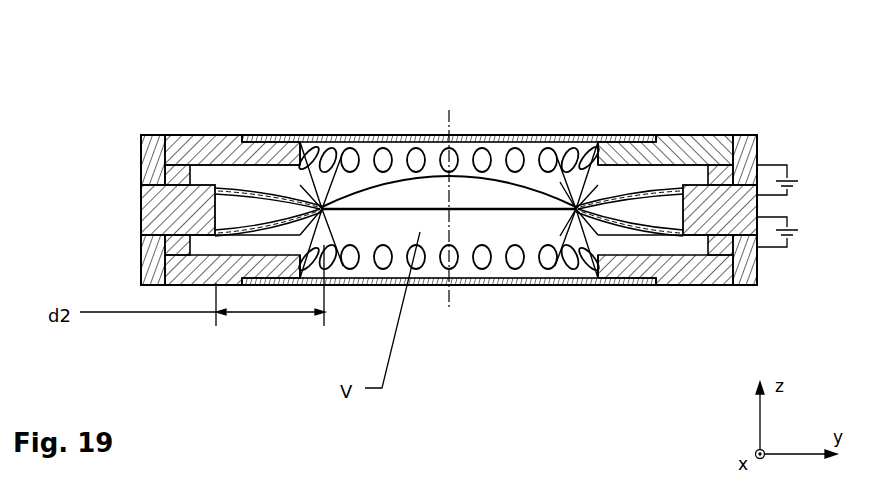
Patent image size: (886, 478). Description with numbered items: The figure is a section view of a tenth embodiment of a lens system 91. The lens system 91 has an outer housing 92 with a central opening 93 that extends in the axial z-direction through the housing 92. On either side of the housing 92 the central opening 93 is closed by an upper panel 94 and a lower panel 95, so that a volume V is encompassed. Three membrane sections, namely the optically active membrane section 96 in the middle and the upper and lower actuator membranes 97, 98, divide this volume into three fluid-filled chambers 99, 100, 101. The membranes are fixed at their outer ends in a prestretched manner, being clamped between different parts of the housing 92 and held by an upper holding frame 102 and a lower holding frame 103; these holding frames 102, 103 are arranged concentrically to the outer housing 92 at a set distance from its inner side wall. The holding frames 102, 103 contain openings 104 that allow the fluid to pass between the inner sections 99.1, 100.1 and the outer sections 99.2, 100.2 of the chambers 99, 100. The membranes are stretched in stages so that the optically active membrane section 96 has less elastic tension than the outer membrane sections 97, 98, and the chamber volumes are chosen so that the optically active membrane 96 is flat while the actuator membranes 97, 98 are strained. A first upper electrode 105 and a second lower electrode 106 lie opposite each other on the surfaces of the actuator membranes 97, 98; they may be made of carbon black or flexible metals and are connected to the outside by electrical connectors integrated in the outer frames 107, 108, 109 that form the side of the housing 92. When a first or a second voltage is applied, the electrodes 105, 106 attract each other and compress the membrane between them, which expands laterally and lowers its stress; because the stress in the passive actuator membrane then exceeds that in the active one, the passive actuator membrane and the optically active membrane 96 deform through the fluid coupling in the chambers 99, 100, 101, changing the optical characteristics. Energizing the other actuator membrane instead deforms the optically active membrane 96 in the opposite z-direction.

The lens system 91 is at (722, 100).
The outer housing 92 is at (623, 115).
The central opening 93 is at (553, 223).
The upper panel 94 is at (493, 141).
The lower panel 95 is at (510, 227).
The optically active membrane section 96 is at (432, 178).
The upper actuator membrane 97 is at (230, 172).
The lower actuator membrane 98 is at (268, 232).
The first chamber 99 is at (337, 158).
The inner section of first chamber 99.1 is at (509, 156).
The outer section of first chamber 99.2 is at (186, 164).
The second chamber 100 is at (553, 262).
The inner section of second chamber 100.1 is at (525, 233).
The outer section of second chamber 100.2 is at (215, 245).
The third chamber 101 is at (232, 215).
The upper holding frame 102 is at (291, 160).
The lower holding frame 103 is at (318, 255).
The openings 104 is at (486, 160).
The first upper electrode 105 is at (152, 140).
The second lower electrode 106 is at (222, 231).
The outer frame 107 is at (745, 135).
The outer frame 108 is at (742, 208).
The outer frame 109 is at (753, 283).